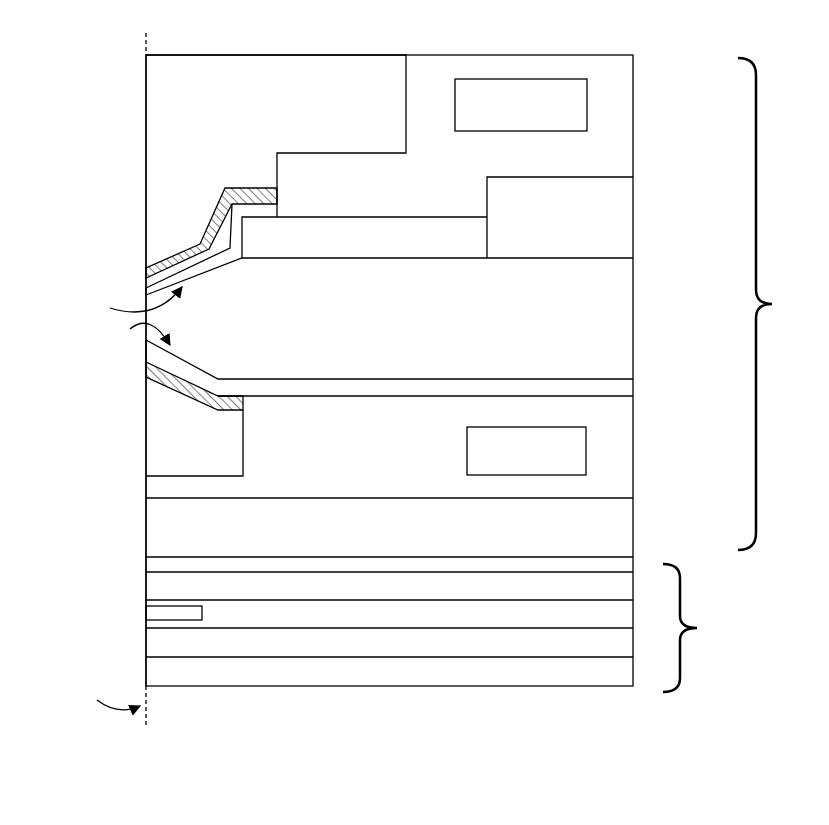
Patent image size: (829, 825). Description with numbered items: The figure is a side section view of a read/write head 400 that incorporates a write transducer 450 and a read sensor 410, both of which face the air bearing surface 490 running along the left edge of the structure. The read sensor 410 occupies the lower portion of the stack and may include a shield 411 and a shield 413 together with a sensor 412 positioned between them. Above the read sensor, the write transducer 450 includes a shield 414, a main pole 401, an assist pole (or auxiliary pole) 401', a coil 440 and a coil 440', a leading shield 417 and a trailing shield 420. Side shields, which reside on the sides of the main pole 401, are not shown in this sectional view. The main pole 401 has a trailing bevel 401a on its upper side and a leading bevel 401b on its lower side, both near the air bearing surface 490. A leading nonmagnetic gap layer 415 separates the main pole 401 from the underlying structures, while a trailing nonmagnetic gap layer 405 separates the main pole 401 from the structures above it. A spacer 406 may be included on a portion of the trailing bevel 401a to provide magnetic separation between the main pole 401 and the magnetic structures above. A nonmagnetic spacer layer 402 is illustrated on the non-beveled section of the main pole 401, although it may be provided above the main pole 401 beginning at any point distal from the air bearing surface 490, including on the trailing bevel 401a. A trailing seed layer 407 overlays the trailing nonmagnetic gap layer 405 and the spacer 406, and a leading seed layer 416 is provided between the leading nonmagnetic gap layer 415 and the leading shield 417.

The read/write head 400 is at (594, 20).
The ABS 490 is at (147, 22).
The trailing shield 420 is at (195, 137).
The coil 440 is at (580, 105).
The coil 440' is at (597, 449).
The nonmagnetic spacer layer 402 is at (481, 195).
The assist pole 401' is at (603, 217).
The main pole 401 is at (438, 327).
The trailing bevel 401a is at (125, 300).
The leading bevel 401b is at (122, 332).
The trailing nonmagnetic gap layer 405 is at (147, 268).
The spacer 406 is at (226, 242).
The trailing seed layer 407 is at (212, 221).
The leading nonmagnetic gap layer 415 is at (146, 343).
The leading seed layer 416 is at (150, 370).
The leading shield 417 is at (144, 439).
The shield 414 is at (435, 527).
The shield 413 is at (340, 590).
The sensor 412 is at (124, 621).
The shield 411 is at (340, 646).
The read sensor 410 is at (393, 628).
The write transducer 450 is at (776, 304).